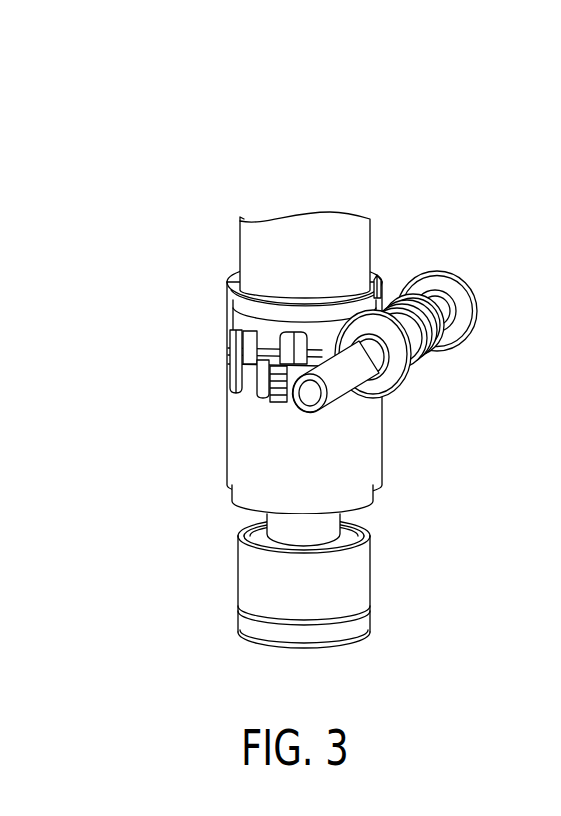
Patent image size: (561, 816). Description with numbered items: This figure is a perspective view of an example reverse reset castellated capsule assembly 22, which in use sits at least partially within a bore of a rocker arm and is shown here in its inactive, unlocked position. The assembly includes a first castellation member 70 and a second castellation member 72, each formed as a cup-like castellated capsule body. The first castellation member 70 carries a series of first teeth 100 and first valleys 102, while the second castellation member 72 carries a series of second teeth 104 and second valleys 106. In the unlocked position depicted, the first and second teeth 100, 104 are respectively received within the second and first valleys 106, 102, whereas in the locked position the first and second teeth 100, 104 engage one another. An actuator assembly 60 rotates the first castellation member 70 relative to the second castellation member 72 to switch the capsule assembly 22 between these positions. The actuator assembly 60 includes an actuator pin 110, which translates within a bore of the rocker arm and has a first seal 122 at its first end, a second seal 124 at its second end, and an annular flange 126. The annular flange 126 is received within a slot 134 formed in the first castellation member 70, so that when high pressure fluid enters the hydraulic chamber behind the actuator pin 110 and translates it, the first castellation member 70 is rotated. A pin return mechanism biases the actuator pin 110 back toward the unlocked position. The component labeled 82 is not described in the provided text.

The reverse reset castellated capsule assembly 22 is at (236, 164).
The actuator assembly 60 is at (418, 322).
The first castellation member 70 is at (234, 318).
The second castellation member 72 is at (370, 440).
The stem 82 is at (373, 240).
The first teeth 100 is at (240, 347).
The first valleys 102 is at (236, 337).
The second teeth 104 is at (233, 372).
The second valleys 106 is at (236, 369).
The actuator pin 110 is at (447, 313).
The first seal 122 is at (476, 308).
The second seal 124 is at (403, 383).
The annular flange 126 is at (432, 360).
The slot 134 is at (383, 277).